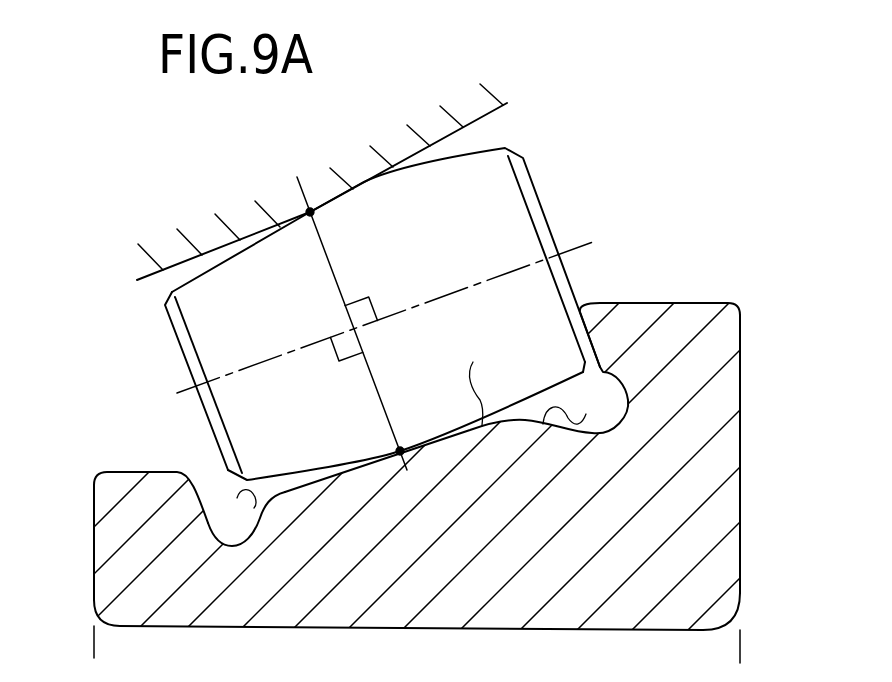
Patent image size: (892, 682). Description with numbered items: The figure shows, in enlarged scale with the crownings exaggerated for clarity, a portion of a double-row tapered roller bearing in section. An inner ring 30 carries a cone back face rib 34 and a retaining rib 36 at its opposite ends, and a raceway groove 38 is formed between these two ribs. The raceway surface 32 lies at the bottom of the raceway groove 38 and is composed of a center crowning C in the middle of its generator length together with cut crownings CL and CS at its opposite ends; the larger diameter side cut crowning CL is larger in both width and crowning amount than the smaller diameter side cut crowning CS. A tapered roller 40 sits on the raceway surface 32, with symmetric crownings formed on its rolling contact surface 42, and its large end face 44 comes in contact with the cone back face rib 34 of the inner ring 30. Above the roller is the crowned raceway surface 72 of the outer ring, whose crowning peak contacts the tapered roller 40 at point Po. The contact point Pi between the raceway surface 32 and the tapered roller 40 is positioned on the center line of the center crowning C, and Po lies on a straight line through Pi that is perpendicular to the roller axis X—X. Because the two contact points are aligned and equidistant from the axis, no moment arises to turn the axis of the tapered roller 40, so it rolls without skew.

The inner ring 30 is at (727, 556).
The raceway surface 32 is at (507, 418).
The cone back face rib 34 is at (723, 366).
The retaining rib 36 is at (107, 498).
The raceway groove 38 is at (210, 474).
The tapered roller 40 is at (505, 192).
The rolling contact surface 42 is at (310, 473).
The large end face 44 is at (578, 288).
The raceway surface 72 is at (452, 145).
The larger diameter side cut crowning CL is at (576, 400).
The smaller diameter side cut crowning CS is at (246, 518).